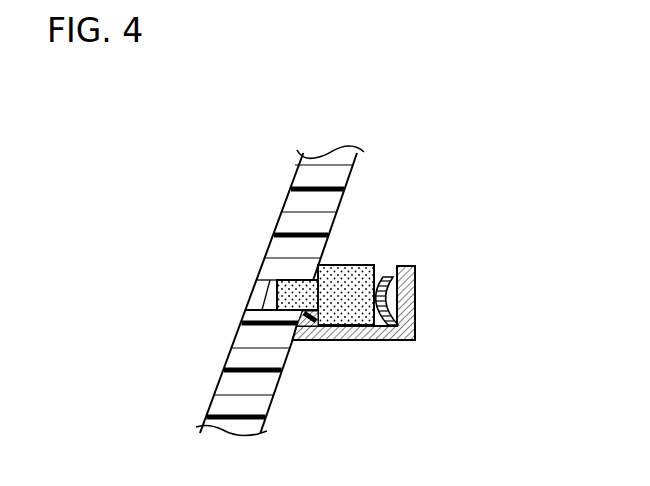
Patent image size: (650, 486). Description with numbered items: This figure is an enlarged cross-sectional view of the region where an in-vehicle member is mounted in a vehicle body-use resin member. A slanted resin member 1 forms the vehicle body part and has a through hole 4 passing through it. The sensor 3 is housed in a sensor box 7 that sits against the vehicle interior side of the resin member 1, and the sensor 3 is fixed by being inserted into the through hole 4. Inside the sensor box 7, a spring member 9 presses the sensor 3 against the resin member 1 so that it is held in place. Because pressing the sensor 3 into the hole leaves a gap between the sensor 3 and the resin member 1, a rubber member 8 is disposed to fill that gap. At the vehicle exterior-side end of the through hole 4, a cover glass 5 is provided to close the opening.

The resin member 1 is at (304, 174).
The sensor 3 is at (337, 266).
The through hole 4 is at (275, 278).
The cover glass 5 is at (252, 297).
The sensor box 7 is at (410, 280).
The rubber member 8 is at (305, 322).
The spring member 9 is at (386, 277).